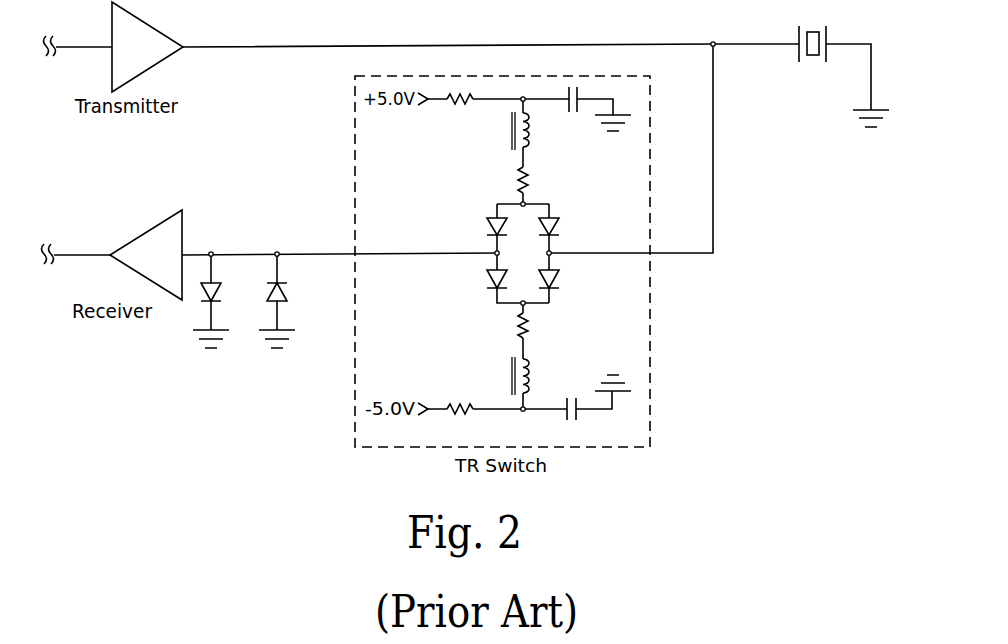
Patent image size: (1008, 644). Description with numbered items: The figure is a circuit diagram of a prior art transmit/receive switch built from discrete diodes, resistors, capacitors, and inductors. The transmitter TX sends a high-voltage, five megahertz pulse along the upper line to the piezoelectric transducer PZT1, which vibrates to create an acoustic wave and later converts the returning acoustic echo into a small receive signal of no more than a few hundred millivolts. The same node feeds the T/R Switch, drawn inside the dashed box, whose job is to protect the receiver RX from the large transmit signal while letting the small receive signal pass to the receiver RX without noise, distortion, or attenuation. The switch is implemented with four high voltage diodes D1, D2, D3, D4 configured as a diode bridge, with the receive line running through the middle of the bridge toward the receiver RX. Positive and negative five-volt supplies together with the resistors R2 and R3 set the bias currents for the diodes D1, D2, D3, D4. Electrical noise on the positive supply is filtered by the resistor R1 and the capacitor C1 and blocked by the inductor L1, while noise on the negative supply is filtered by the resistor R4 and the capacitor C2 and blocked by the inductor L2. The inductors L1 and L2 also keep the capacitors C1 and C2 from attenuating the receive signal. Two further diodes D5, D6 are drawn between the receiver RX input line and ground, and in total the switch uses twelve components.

The transmitter TX is at (147, 47).
The receiver RX is at (146, 255).
The piezoelectric transducer PZT1 is at (838, 76).
The resistor R1 is at (460, 109).
The resistor R2 is at (537, 180).
The resistor R3 is at (536, 327).
The resistor R4 is at (460, 420).
The inductor L1 is at (508, 131).
The inductor L2 is at (507, 376).
The capacitor C1 is at (596, 111).
The capacitor C2 is at (594, 410).
The high voltage diode D1 is at (483, 228).
The high voltage diode D2 is at (483, 281).
The high voltage diode D3 is at (565, 228).
The high voltage diode D4 is at (565, 281).
The diode D5 is at (222, 315).
The diode D6 is at (288, 315).